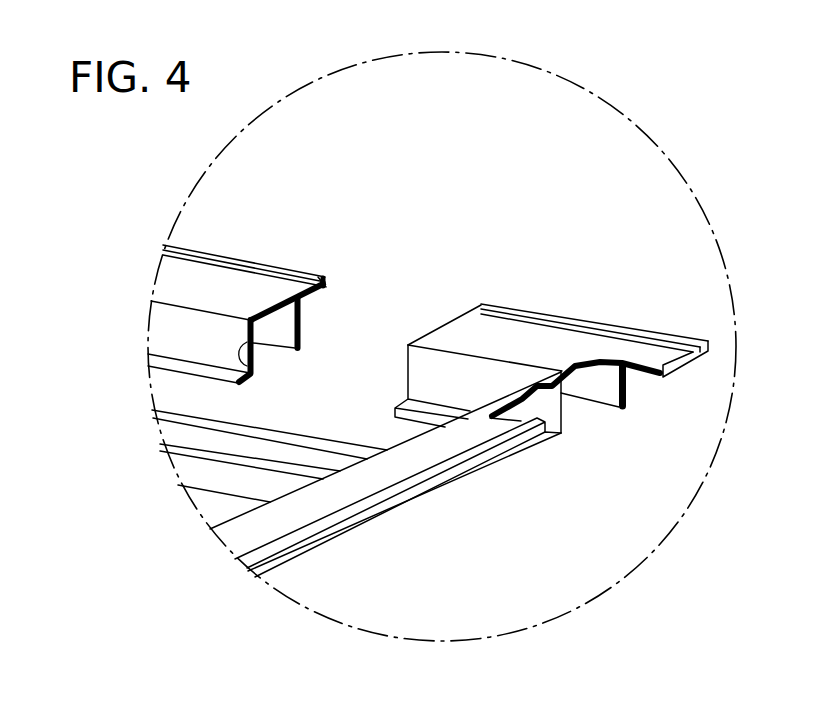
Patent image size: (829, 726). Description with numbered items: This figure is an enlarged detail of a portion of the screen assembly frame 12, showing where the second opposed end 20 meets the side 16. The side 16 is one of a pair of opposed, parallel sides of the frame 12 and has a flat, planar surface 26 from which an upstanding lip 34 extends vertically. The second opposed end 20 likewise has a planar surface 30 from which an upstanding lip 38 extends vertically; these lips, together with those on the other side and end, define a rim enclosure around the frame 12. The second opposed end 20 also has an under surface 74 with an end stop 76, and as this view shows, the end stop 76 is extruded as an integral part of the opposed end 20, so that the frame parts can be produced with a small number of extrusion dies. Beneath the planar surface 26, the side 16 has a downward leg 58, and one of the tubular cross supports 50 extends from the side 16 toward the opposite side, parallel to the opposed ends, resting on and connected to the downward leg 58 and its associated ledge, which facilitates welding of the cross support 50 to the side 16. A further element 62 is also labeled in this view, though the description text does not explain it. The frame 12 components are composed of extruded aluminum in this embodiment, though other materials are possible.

The frame 12 is at (522, 217).
The side 16 is at (474, 521).
The second opposed end 20 is at (401, 246).
The planar surface 26 is at (305, 502).
The planar surface 30 is at (203, 280).
The upstanding lip 34 is at (364, 495).
The upstanding lip 38 is at (282, 268).
The tubular cross support 50 is at (175, 412).
The downward leg 58 is at (500, 465).
The web 62 is at (417, 372).
The under surface 74 is at (328, 295).
The end stop 76 is at (303, 333).